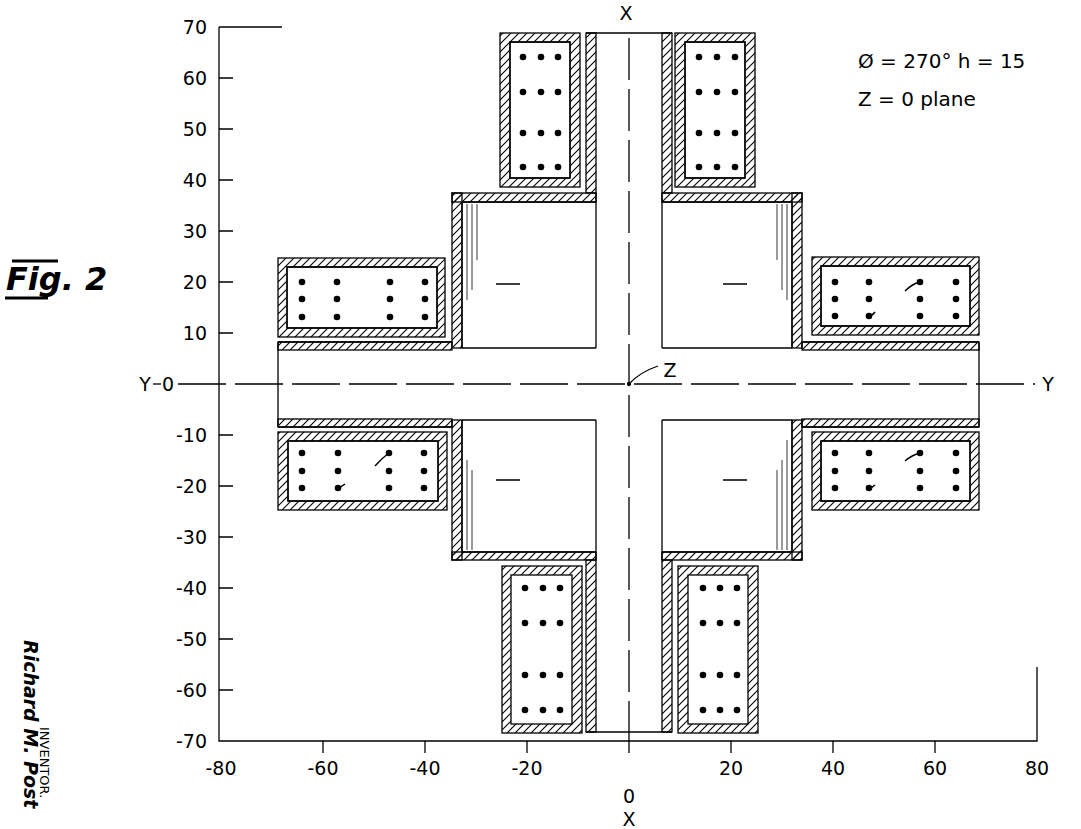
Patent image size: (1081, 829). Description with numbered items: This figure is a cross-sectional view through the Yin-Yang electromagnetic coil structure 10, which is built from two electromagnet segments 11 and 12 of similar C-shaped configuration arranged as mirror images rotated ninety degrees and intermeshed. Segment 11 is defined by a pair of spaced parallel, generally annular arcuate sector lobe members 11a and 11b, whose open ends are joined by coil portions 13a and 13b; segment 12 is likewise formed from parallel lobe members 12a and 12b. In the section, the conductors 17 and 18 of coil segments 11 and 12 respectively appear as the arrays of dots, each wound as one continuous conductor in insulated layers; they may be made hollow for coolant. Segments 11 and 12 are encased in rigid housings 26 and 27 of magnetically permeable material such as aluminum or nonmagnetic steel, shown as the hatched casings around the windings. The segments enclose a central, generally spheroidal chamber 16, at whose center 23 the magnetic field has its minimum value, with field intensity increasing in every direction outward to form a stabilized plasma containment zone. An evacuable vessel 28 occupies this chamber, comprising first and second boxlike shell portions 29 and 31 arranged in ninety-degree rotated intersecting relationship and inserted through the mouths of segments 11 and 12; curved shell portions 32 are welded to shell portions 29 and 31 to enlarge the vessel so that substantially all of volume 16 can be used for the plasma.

The electromagnetic coil structure 10 is at (770, 164).
The electromagnet segment 11 is at (278, 285).
The C-shaped lobe member 11a is at (374, 270).
The C-shaped lobe member 11b is at (408, 510).
The electromagnet segment 12 is at (532, 33).
The C-shaped lobe member 12a is at (523, 113).
The C-shaped lobe member 12b is at (735, 146).
The coil portion 13a is at (309, 510).
The coil portion 13b is at (979, 266).
The central chamber 16 is at (540, 385).
The conductor 17 is at (629, 385).
The conductor 18 is at (558, 133).
The center 23 is at (629, 384).
The coil form or rigid housing 26 is at (979, 292).
The coil form or rigid housing 27 is at (500, 82).
The evacuable vessel 28 is at (436, 354).
The boxlike shell portion 29 is at (313, 419).
The boxlike shell portion 31 is at (596, 106).
The curved shell portion 32 is at (627, 376).